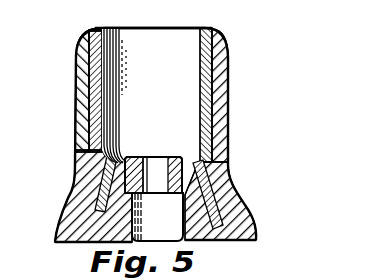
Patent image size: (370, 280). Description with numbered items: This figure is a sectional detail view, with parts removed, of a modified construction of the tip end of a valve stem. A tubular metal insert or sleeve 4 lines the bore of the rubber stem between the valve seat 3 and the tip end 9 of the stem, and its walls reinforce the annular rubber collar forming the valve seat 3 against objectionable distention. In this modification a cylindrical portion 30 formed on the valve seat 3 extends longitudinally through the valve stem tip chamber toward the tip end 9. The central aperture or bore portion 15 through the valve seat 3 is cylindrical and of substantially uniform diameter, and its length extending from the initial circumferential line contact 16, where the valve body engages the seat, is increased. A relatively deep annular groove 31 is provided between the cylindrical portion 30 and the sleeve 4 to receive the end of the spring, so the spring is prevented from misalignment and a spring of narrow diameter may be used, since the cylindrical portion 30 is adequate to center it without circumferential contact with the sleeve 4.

The tubular insert 4 is at (229, 103).
The tip end 9 is at (210, 28).
The valve seat 3 is at (191, 172).
The annular groove 31 is at (120, 142).
The cylindrical portion 30 is at (174, 157).
The central aperture 15 is at (150, 158).
The line contact 16 is at (164, 198).